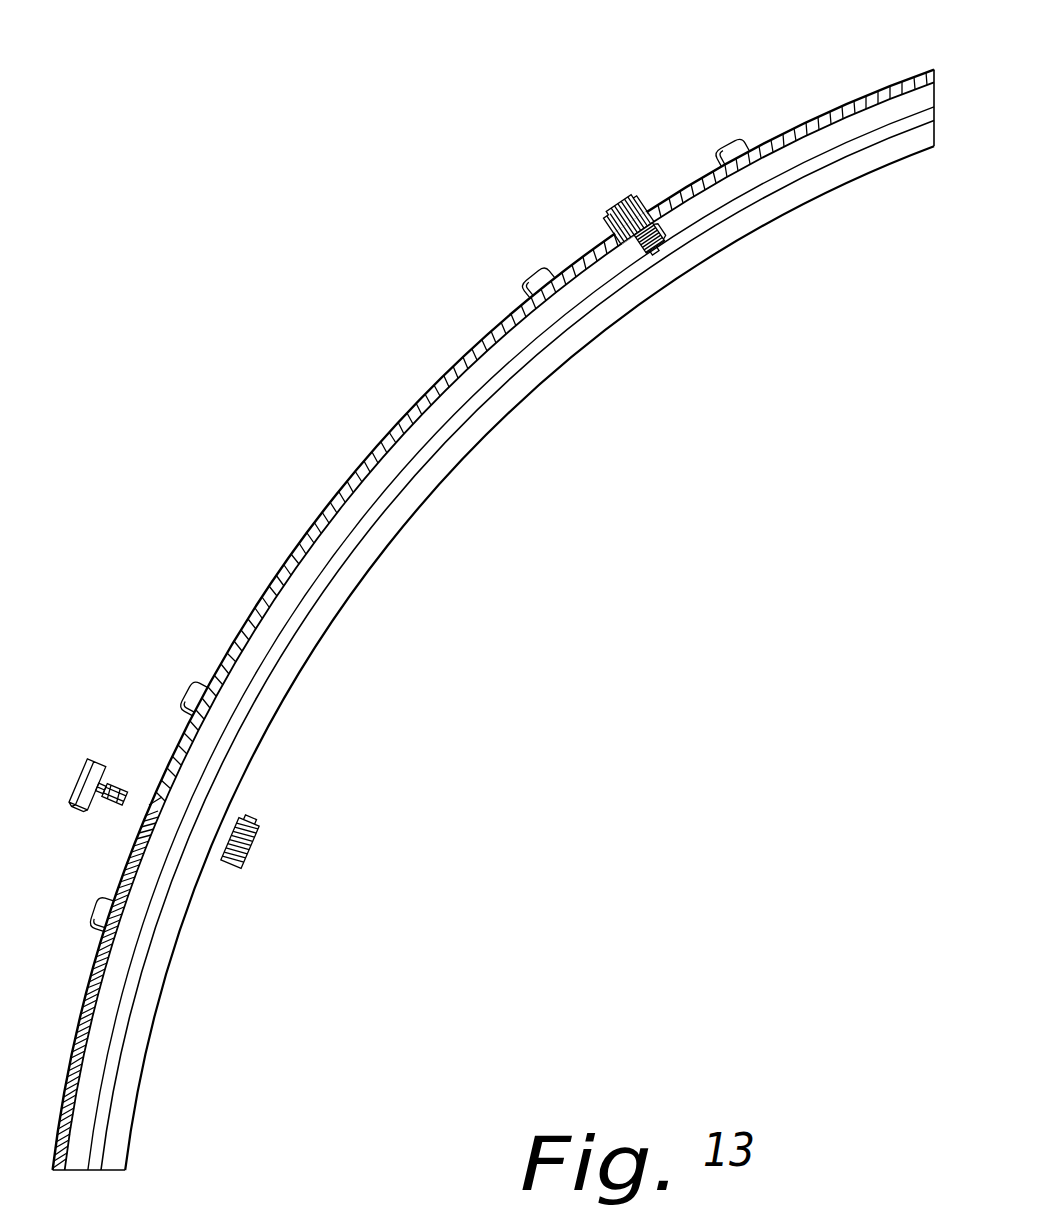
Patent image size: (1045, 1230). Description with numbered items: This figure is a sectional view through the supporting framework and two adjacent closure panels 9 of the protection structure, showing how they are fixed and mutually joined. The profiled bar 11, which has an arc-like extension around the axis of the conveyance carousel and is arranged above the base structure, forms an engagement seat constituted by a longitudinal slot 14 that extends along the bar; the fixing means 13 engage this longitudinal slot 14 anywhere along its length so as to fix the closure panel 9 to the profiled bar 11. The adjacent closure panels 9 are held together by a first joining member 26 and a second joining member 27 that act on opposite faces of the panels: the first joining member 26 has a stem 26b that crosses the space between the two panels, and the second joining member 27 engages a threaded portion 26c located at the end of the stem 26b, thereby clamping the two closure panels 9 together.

The closure panel 9 is at (835, 108).
The profiled bar 11 is at (552, 372).
The fixing means 13 is at (523, 268).
The longitudinal slot 14 is at (430, 447).
The first joining member 26 is at (350, 487).
The stem 26b is at (101, 788).
The threaded portion 26c is at (115, 794).
The second joining member 27 is at (510, 578).